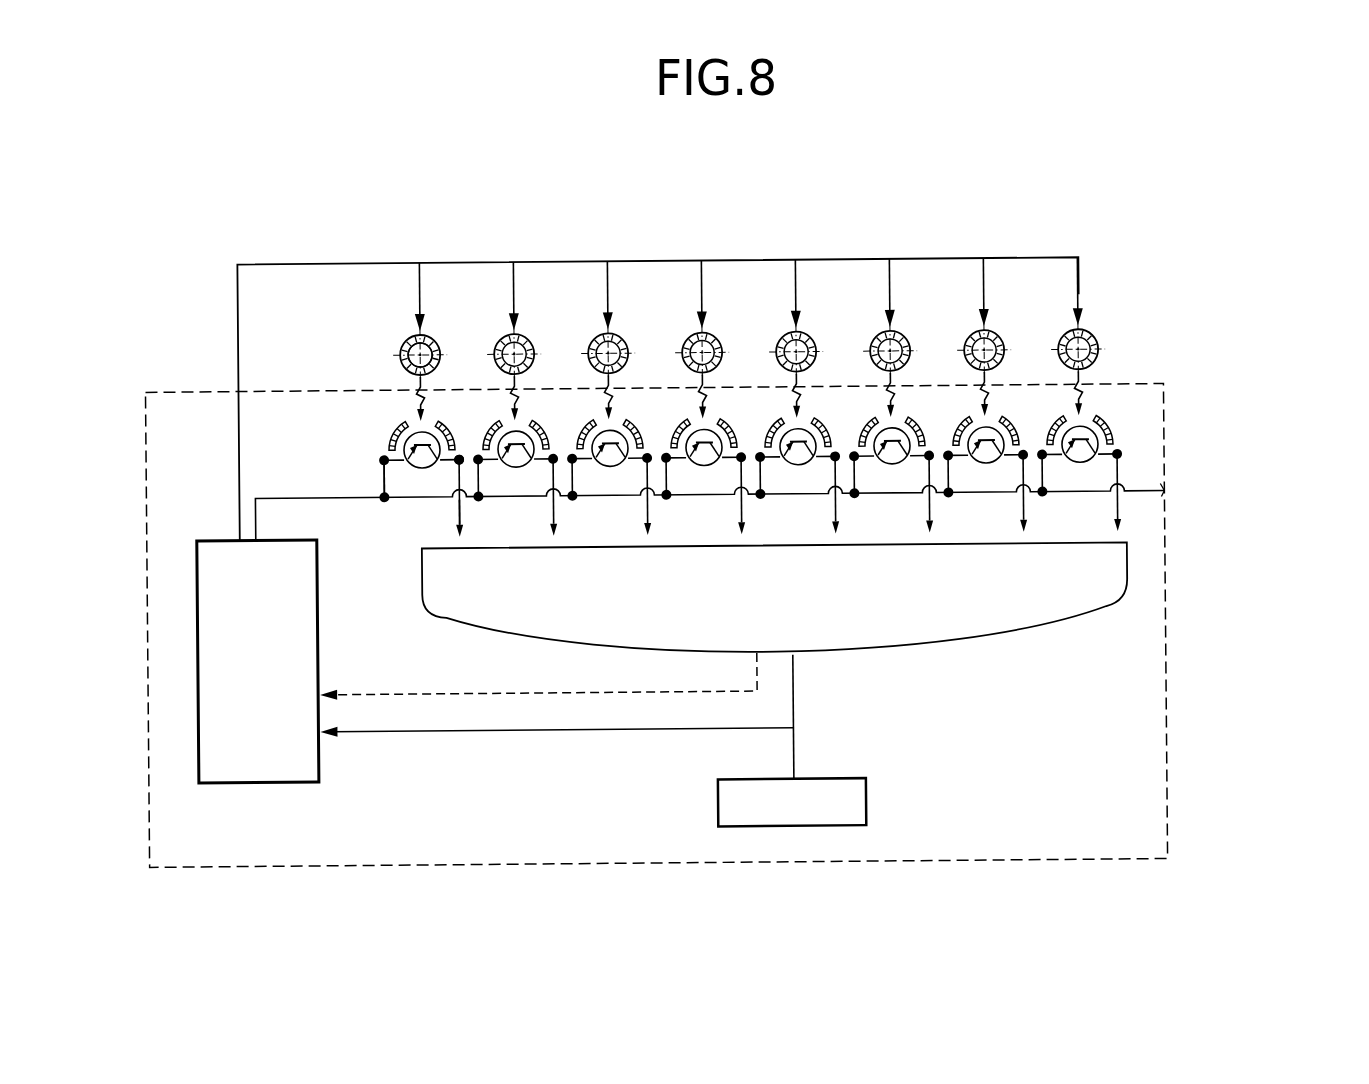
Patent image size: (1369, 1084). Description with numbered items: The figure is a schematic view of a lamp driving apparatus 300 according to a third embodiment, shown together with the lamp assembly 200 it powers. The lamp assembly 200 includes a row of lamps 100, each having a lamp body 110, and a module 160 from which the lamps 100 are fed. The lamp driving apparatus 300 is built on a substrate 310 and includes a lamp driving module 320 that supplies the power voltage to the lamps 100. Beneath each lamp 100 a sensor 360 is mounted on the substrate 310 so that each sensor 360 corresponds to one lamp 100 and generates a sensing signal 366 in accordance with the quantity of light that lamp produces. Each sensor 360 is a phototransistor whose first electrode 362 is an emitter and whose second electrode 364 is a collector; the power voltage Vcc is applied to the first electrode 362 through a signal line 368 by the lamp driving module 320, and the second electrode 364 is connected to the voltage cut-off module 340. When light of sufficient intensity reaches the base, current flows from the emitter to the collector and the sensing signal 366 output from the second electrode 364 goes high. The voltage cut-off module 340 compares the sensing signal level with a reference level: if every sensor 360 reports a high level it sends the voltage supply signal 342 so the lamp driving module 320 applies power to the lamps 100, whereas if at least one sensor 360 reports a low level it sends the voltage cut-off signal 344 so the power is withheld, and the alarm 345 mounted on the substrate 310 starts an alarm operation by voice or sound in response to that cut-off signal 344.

The lamp 100 is at (388, 333).
The lamp body 110 is at (436, 341).
The module 160 is at (745, 263).
The lamp assembly 200 is at (700, 299).
The lamp driving apparatus 300 is at (700, 645).
The substrate 310 is at (1036, 866).
The lamp driving module 320 is at (196, 661).
The voltage cut-off module 340 is at (978, 626).
The voltage supply signal 342 is at (393, 694).
The voltage cut-off signal 344 is at (478, 732).
The alarm 345 is at (864, 800).
The sensor 360 is at (392, 408).
The first electrode 362 is at (383, 480).
The second electrode 364 is at (453, 452).
The sensing signal 366 is at (457, 507).
The signal line 368 is at (255, 521).